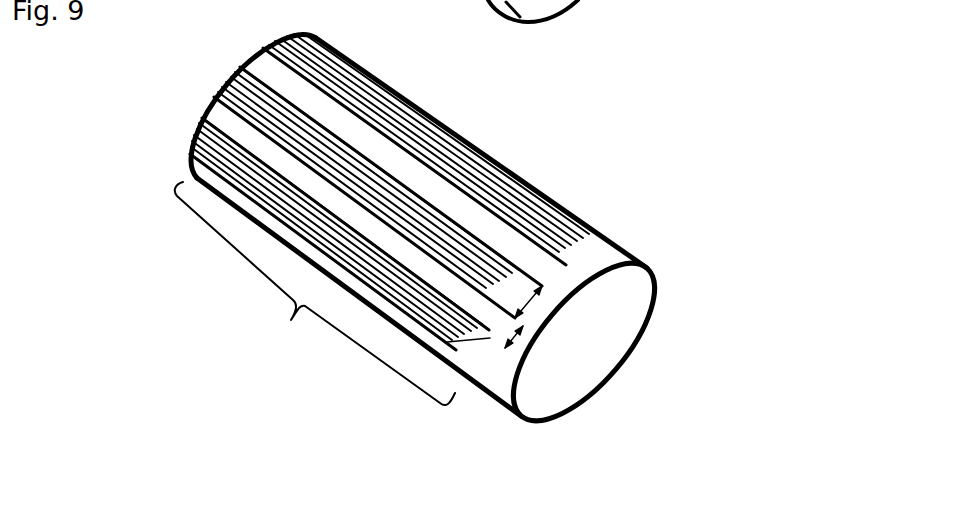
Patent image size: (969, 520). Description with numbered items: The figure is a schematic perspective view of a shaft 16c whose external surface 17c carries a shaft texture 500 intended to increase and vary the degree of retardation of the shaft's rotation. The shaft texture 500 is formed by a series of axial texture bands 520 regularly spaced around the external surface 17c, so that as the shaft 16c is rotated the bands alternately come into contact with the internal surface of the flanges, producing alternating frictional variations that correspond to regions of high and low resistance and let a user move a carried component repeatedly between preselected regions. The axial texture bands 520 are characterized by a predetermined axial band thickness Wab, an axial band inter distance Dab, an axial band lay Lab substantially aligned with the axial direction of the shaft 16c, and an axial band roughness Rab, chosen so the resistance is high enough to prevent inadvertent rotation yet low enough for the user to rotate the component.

The external surface 17c is at (585, 240).
The shaft 16c is at (608, 296).
The axial texture bands 520 is at (313, 57).
The shaft texture 500 is at (315, 293).
The axial band thickness Wab is at (530, 303).
The axial band inter distance Dab is at (515, 338).
The axial band lay Lab is at (490, 338).
The axial band roughness Rab is at (480, 358).